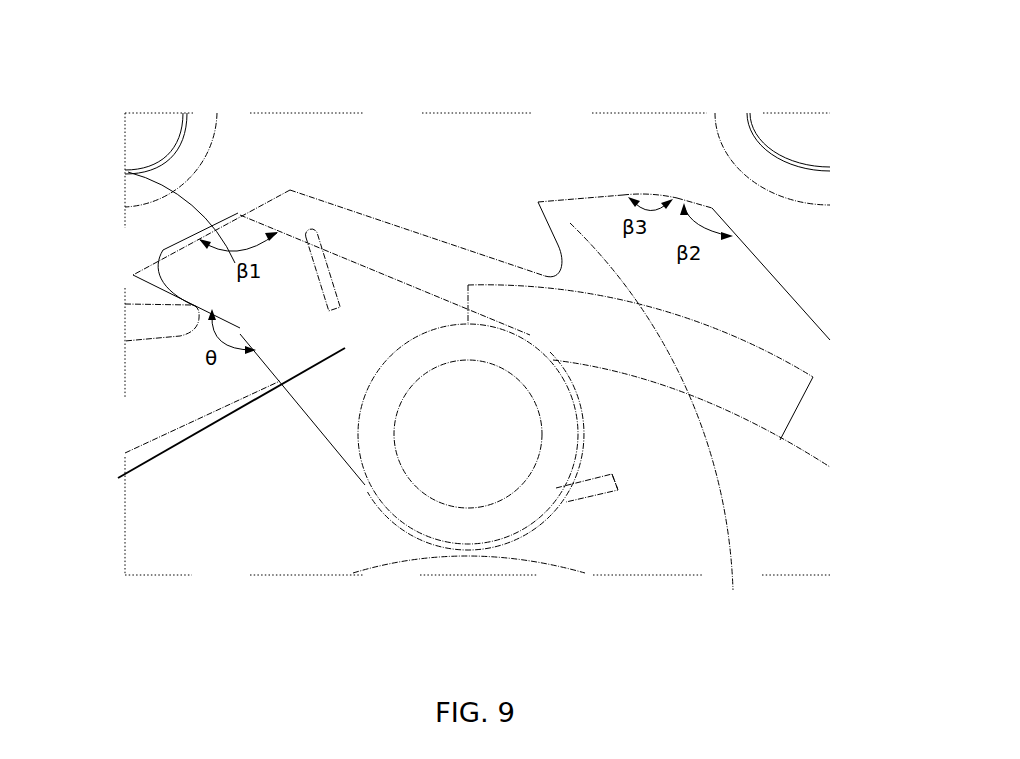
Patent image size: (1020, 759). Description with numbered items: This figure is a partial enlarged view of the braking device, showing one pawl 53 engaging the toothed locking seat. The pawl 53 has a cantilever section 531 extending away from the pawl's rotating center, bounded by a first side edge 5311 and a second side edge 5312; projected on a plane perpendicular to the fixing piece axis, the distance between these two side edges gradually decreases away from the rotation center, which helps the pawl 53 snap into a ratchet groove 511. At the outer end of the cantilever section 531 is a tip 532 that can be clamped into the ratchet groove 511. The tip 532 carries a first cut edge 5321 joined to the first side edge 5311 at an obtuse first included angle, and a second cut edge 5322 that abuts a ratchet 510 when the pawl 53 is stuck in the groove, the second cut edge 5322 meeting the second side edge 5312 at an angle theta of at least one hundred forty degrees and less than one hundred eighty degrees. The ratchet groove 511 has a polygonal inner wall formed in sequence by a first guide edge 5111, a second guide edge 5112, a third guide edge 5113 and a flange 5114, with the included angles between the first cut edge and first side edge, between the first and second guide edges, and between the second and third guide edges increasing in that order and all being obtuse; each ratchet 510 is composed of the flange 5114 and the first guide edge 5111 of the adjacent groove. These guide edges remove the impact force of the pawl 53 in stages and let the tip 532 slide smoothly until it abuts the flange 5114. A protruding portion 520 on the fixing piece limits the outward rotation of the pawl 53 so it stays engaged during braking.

The ratchet 510 is at (520, 245).
The ratchet groove 511 is at (733, 590).
The first guide edge 5111 is at (382, 218).
The second guide edge 5112 is at (677, 198).
The third guide edge 5113 is at (602, 194).
The flange 5114 is at (549, 200).
The protruding portion 520 is at (740, 383).
The pawl 53 is at (337, 466).
The cantilever section 531 is at (205, 425).
The first side edge 5311 is at (295, 235).
The second side edge 5312 is at (293, 398).
The tip 532 is at (185, 273).
The first cut edge 5321 is at (128, 171).
The second cut edge 5322 is at (125, 304).